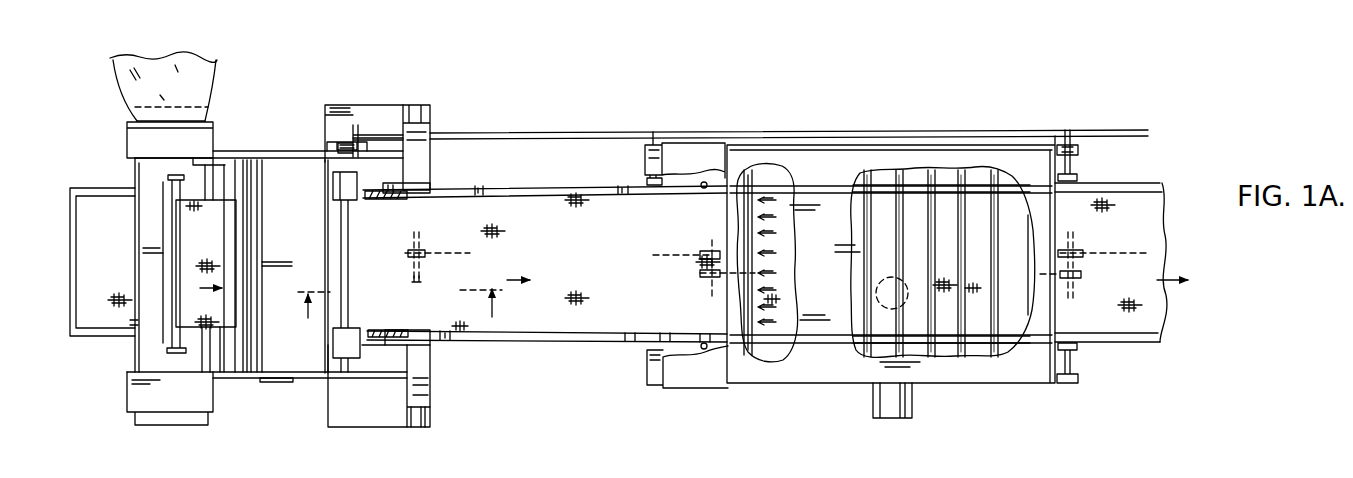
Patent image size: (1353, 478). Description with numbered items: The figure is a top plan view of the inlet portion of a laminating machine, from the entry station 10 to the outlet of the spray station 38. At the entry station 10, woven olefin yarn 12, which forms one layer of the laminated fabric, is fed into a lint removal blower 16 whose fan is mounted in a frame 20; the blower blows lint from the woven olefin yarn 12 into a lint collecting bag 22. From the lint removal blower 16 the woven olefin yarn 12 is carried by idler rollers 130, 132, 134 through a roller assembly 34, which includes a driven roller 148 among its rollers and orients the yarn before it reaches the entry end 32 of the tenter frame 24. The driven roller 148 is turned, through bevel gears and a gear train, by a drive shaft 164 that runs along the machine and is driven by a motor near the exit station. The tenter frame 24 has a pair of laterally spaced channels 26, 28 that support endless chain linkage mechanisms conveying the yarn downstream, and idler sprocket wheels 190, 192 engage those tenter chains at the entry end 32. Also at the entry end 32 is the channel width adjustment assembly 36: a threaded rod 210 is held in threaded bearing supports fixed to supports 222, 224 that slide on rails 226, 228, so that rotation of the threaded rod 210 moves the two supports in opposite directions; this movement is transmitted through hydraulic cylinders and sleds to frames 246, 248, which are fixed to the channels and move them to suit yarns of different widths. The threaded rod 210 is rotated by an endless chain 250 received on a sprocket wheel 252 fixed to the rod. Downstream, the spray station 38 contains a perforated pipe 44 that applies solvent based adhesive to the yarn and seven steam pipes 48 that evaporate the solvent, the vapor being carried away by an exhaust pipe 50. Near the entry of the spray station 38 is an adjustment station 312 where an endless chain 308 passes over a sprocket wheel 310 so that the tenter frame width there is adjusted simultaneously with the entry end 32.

The entry station 10 is at (559, 102).
The woven olefin yarn 12 is at (632, 277).
The lint removal blower 16 is at (142, 343).
The frame 20 is at (234, 378).
The lint collecting bag 22 is at (209, 80).
The tenter frame 24 is at (565, 347).
The channel 26 is at (497, 342).
The channel 28 is at (535, 188).
The entry end 32 is at (402, 305).
The roller assembly 34 is at (370, 359).
The channel width adjustment assembly 36 is at (419, 368).
The spray station 38 is at (1026, 366).
The perforated pipe 44 is at (758, 347).
The steam pipes 48 is at (993, 260).
The exhaust pipe 50 is at (888, 285).
The idler roller 130 is at (178, 340).
The idler roller 132 is at (227, 355).
The idler roller 134 is at (250, 362).
The driven roller 148 is at (342, 185).
The drive shaft 164 is at (567, 133).
The idler sprocket wheel 190 is at (372, 328).
The idler sprocket wheel 192 is at (362, 199).
The threaded rod 210 is at (417, 282).
The support 222 is at (430, 403).
The support 224 is at (421, 161).
The rail 226 is at (409, 427).
The rail 228 is at (425, 427).
The frame 246 is at (432, 344).
The frame 248 is at (430, 186).
The endless chain 250 is at (460, 253).
The sprocket wheel 252 is at (405, 258).
The endless chain 308 is at (1145, 256).
The sprocket wheel 310 is at (1077, 252).
The adjustment station 312 is at (1081, 279).